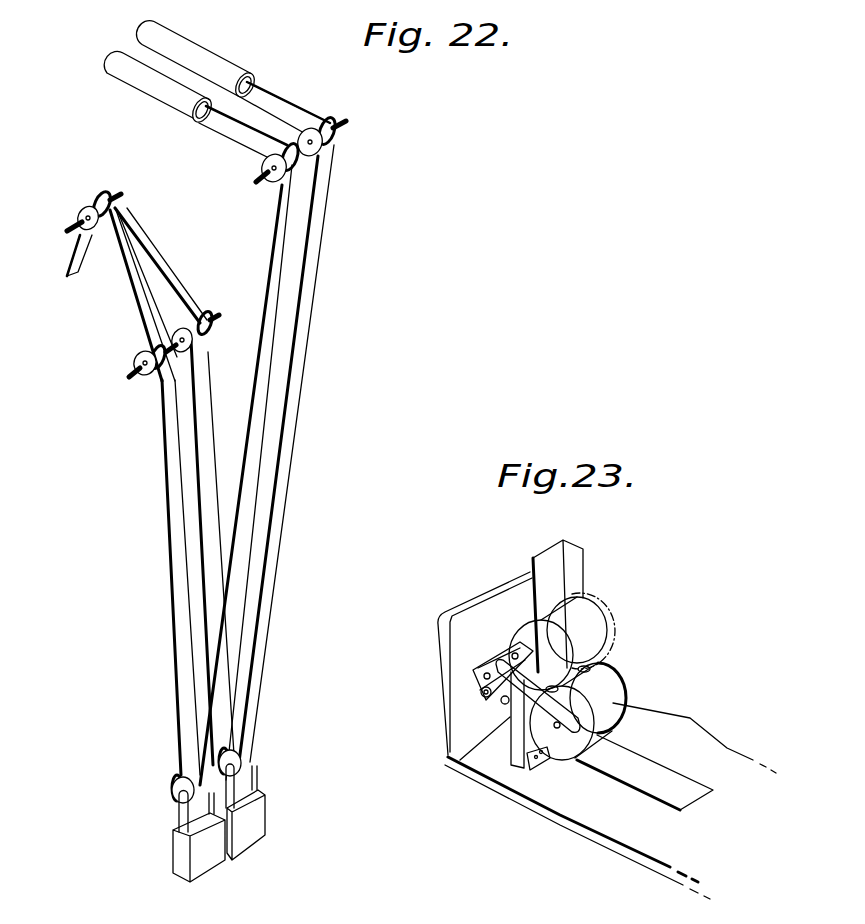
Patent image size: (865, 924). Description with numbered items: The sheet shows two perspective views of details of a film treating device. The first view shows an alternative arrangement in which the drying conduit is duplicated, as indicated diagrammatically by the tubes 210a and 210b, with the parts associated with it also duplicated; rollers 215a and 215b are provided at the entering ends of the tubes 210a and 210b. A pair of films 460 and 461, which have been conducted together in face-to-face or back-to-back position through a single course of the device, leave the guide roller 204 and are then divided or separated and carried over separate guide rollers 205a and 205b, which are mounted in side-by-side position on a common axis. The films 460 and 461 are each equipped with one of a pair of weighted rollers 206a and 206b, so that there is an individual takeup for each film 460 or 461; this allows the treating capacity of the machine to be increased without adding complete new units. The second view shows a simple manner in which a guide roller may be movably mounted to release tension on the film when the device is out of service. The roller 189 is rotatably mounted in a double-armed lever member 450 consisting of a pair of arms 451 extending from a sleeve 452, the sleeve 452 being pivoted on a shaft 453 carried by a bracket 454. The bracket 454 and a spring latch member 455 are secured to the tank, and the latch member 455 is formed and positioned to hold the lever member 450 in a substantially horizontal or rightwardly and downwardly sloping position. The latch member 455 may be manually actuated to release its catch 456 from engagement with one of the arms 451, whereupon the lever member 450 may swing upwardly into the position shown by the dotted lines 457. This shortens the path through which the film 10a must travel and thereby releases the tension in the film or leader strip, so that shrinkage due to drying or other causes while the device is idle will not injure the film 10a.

In FIG. 22, the tube 210a is at (156, 99).
In FIG. 22, the tube 210b is at (205, 62).
In FIG. 22, the roller 215a is at (262, 165).
In FIG. 22, the roller 215b is at (352, 135).
In FIG. 22, the guide roller 204 is at (80, 212).
In FIG. 22, the film 460 is at (140, 298).
In FIG. 22, the film 461 is at (156, 278).
In FIG. 22, the guide roller 205a is at (136, 362).
In FIG. 22, the guide roller 205b is at (205, 318).
In FIG. 22, the weighted roller 206a is at (180, 794).
In FIG. 22, the weighted roller 206b is at (255, 766).
In FIG. 23, the double-armed lever member 450 is at (537, 760).
In FIG. 23, the arms 451 is at (505, 698).
In FIG. 23, the sleeve 452 is at (512, 668).
In FIG. 23, the shaft 453 is at (481, 689).
In FIG. 23, the bracket 454 is at (488, 670).
In FIG. 23, the spring latch member 455 is at (518, 735).
In FIG. 23, the catch 456 is at (502, 700).
In FIG. 23, the dotted lines 457 is at (608, 620).
In FIG. 23, the roller 189 is at (597, 697).
In FIG. 23, the film 10a is at (645, 768).